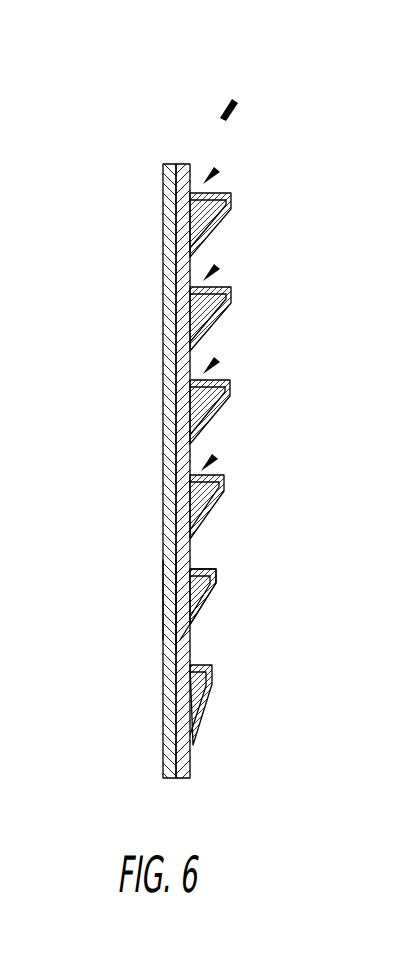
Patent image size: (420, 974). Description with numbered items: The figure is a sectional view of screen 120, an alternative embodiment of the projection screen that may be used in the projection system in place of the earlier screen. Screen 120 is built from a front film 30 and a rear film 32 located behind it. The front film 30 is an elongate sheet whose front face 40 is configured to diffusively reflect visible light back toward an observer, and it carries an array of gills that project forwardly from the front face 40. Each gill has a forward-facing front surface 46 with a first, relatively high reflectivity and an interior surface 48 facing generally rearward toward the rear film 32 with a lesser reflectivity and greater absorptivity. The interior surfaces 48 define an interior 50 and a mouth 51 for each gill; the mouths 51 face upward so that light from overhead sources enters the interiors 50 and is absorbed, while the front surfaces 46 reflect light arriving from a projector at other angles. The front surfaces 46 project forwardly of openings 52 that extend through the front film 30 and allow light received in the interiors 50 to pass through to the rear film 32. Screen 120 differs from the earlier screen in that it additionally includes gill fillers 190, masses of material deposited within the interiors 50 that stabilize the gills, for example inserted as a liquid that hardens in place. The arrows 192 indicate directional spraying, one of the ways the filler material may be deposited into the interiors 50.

The front film 30 is at (185, 163).
The rear film 32 is at (176, 163).
The front face 40 is at (283, 776).
The front surface 46 is at (303, 634).
The interior surface 48 is at (343, 685).
The interior 50 is at (110, 764).
The mouth 51 is at (276, 628).
The opening 52 is at (64, 716).
The screen 120 is at (270, 80).
The gill filler 190 is at (330, 190).
The arrow 192 is at (272, 316).